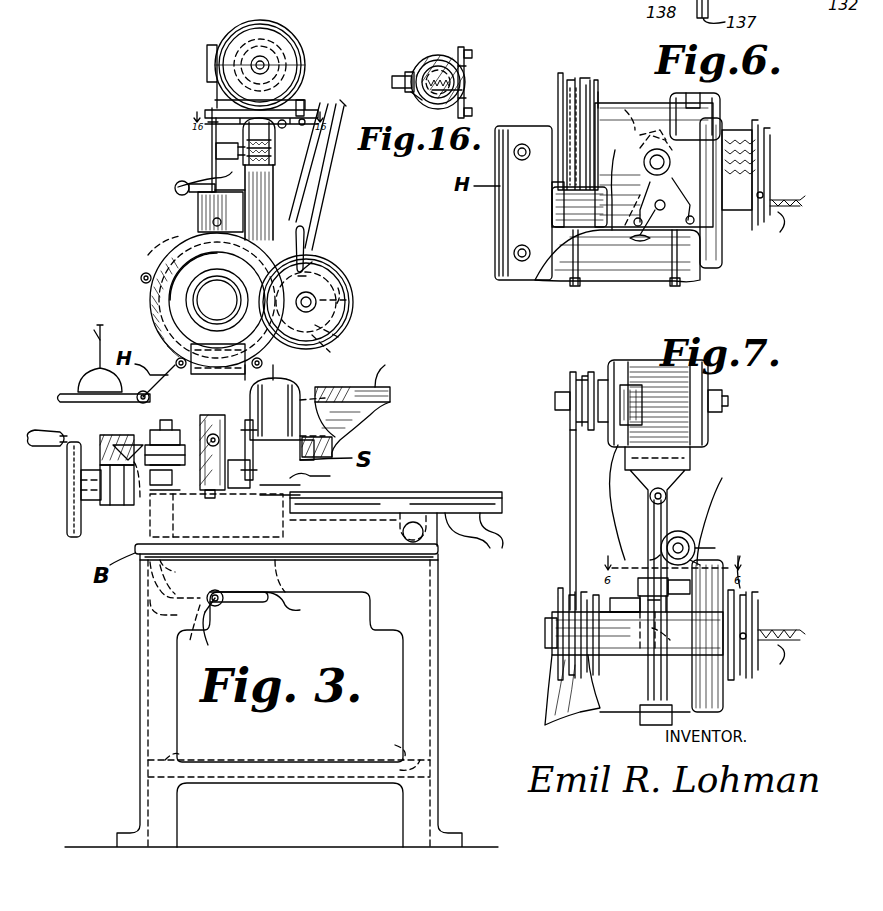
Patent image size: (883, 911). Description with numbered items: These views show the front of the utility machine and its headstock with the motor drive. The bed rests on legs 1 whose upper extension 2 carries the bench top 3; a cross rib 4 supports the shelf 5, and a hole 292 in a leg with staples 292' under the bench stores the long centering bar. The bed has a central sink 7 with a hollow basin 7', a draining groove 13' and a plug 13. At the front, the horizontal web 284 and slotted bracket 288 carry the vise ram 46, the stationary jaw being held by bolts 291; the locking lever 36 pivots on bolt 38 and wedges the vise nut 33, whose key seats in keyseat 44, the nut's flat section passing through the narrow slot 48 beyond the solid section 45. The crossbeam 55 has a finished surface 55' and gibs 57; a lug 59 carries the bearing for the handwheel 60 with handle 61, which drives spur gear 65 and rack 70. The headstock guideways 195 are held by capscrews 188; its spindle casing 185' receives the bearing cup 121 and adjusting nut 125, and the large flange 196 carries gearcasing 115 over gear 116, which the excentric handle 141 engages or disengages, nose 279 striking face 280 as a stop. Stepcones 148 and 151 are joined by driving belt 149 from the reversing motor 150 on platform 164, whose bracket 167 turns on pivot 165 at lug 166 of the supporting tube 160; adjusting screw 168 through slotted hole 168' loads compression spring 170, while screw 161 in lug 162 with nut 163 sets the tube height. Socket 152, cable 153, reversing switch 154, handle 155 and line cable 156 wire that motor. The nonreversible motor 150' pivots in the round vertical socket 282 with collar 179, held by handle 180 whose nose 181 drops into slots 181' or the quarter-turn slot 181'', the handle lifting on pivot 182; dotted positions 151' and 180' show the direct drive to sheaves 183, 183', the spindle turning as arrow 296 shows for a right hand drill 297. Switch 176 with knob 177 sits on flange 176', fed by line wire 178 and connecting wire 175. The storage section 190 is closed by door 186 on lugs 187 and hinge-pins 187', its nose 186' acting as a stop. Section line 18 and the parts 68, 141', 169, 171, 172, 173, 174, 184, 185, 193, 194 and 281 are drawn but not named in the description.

In FIG. 3, the legs 1 is at (418, 645).
In FIG. 3, the upper extension 2 is at (455, 540).
In FIG. 3, the bench top 3 is at (380, 492).
In FIG. 3, the cross rib 4 is at (432, 768).
In FIG. 3, the shelf 5 is at (190, 750).
In FIG. 3, the sink 7 is at (255, 604).
In FIG. 3, the hollow basin 7' is at (238, 579).
In FIG. 3, the plug 13 is at (232, 613).
In FIG. 3, the draining groove 13' is at (220, 614).
In FIG. 3, the slide 18 is at (290, 490).
In FIG. 3, the vise nut 33 is at (195, 430).
In FIG. 3, the locking lever 36 is at (160, 490).
In FIG. 3, the bolt 38 is at (210, 500).
In FIG. 3, the keyseat 44 is at (224, 490).
In FIG. 3, the solid section 45 is at (250, 488).
In FIG. 3, the vise ram 46 is at (210, 374).
In FIG. 3, the narrow slot 48 is at (235, 485).
In FIG. 3, the crossbeam 55 is at (363, 429).
In FIG. 3, the finished surface 55' is at (387, 368).
In FIG. 3, the gibs 57 is at (392, 392).
In FIG. 3, the lug 59 is at (105, 505).
In FIG. 3, the handwheel 60 is at (66, 526).
In FIG. 3, the handle 61 is at (40, 432).
In FIG. 3, the spur gear 65 is at (134, 475).
In FIG. 3, the shaft 68 is at (80, 470).
In FIG. 3, the rack 70 is at (80, 486).
In FIG. 7, the gearcasing 115 is at (723, 705).
In FIG. 3, the gear 116 is at (280, 295).
In FIG. 3, the cup 121 is at (185, 283).
In FIG. 6, the adjusting nut 125 is at (550, 218).
In FIG. 7, the adjusting nut 125 is at (550, 650).
In FIG. 3, the handle 141 is at (336, 238).
In FIG. 3, the handle socket 141' is at (361, 288).
In FIG. 3, the stepcone 148 is at (325, 278).
In FIG. 6, the stepcone 148 is at (548, 70).
In FIG. 7, the stepcone 148 is at (556, 598).
In FIG. 3, the driving belt 149 is at (312, 197).
In FIG. 6, the driving belt 149 is at (582, 78).
In FIG. 7, the driving belt 149 is at (569, 465).
In FIG. 3, the reversing motor 150 is at (285, 65).
In FIG. 6, the nonreversible motor 150' is at (685, 106).
In FIG. 7, the nonreversible motor 150' is at (642, 391).
In FIG. 3, the stepcone 151 is at (297, 65).
In FIG. 6, the stepcone 151 is at (579, 207).
In FIG. 7, the stepcone 151 is at (567, 398).
In FIG. 6, the stepcone dotted position 151' is at (751, 163).
In FIG. 3, the connecting socket 152 is at (206, 58).
In FIG. 3, the cable 153 is at (212, 97).
In FIG. 3, the reversing switch 154 is at (205, 214).
In FIG. 3, the handle 155 is at (175, 190).
In FIG. 3, the line cable 156 is at (325, 150).
In FIG. 3, the supporting tube 160 is at (275, 378).
In FIG. 6, the supporting tube 160 is at (622, 148).
In FIG. 7, the supporting tube 160 is at (650, 520).
In FIG. 3, the screw 161 is at (290, 382).
In FIG. 3, the lug 162 is at (302, 446).
In FIG. 3, the nut 163 is at (291, 418).
In FIG. 3, the adjustable platform 164 is at (210, 118).
In FIG. 3, the pivot 165 is at (300, 102).
In FIG. 16, the pivot 165 is at (465, 52).
In FIG. 3, the lug 166 is at (303, 120).
In FIG. 16, the lug 166 is at (426, 60).
In FIG. 16, the bracket 167 is at (436, 56).
In FIG. 3, the adjusting screw 168 is at (199, 148).
In FIG. 16, the adjusting screw 168 is at (386, 81).
In FIG. 3, the slotted hole 168' is at (174, 177).
In FIG. 3, the pin 169 is at (212, 188).
In FIG. 16, the pin 169 is at (414, 96).
In FIG. 3, the compression spring 170 is at (268, 172).
In FIG. 16, the compression spring 170 is at (464, 92).
In FIG. 16, the bushing 171 is at (452, 76).
In FIG. 3, the spring collar 172 is at (270, 150).
In FIG. 16, the spring collar 172 is at (422, 66).
In FIG. 7, the motor shaft 173 is at (554, 406).
In FIG. 7, the motor terminal 174 is at (636, 408).
In FIG. 7, the connecting wire 175 is at (614, 488).
In FIG. 7, the on and off switch 176 is at (681, 537).
In FIG. 7, the flange 176' is at (623, 548).
In FIG. 7, the turning knob 177 is at (696, 548).
In FIG. 7, the line wire 178 is at (708, 498).
In FIG. 7, the collar 179 is at (636, 594).
In FIG. 6, the handle 180 is at (654, 185).
In FIG. 7, the handle 180 is at (637, 634).
In FIG. 6, the handle dotted position 180' is at (630, 104).
In FIG. 7, the nose 181 is at (632, 633).
In FIG. 6, the slots 181' is at (655, 124).
In FIG. 6, the further slot 181'' is at (616, 231).
In FIG. 6, the pivot 182 is at (658, 210).
In FIG. 7, the pivot 182 is at (618, 612).
In FIG. 6, the direct drive sheave 183 is at (775, 201).
In FIG. 7, the direct drive sheave 183 is at (762, 624).
In FIG. 7, the direct drive sheave 183' is at (764, 566).
In FIG. 6, the gear 184 is at (758, 156).
In FIG. 3, the housing 185 is at (188, 300).
In FIG. 6, the housing 185 is at (503, 203).
In FIG. 7, the housing 185 is at (559, 690).
In FIG. 3, the spindle casing 185' is at (138, 242).
In FIG. 3, the door 186 is at (104, 367).
In FIG. 6, the door 186 is at (617, 268).
In FIG. 3, the nose 186' is at (71, 347).
In FIG. 6, the lugs 187 is at (606, 278).
In FIG. 6, the hinge-pins 187' is at (651, 300).
In FIG. 3, the capscrews 188 is at (148, 429).
In FIG. 6, the capscrews 188 is at (522, 144).
In FIG. 3, the hollow cored out section 190 is at (140, 405).
In FIG. 3, the bolt 193 is at (140, 279).
In FIG. 3, the cam 194 is at (346, 338).
In FIG. 3, the guideways 195 is at (168, 460).
In FIG. 6, the large flange 196 is at (722, 262).
In FIG. 7, the large flange 196 is at (723, 675).
In FIG. 3, the nose 279 is at (348, 306).
In FIG. 3, the face 280 is at (333, 350).
In FIG. 3, the lug 281 is at (314, 250).
In FIG. 6, the lug 281 is at (606, 100).
In FIG. 7, the round vertical socket 282 is at (625, 615).
In FIG. 3, the horizontal web 284 is at (329, 477).
In FIG. 3, the slotted bracket 288 is at (240, 500).
In FIG. 7, the slotted bracket 288 is at (720, 640).
In FIG. 3, the bolts 291 is at (250, 572).
In FIG. 3, the hole 292 is at (436, 517).
In FIG. 3, the staples 292' is at (441, 503).
In FIG. 6, the arrow 296 is at (770, 198).
In FIG. 7, the arrow 296 is at (774, 623).
In FIG. 6, the right hand drill 297 is at (780, 232).
In FIG. 7, the right hand drill 297 is at (775, 664).